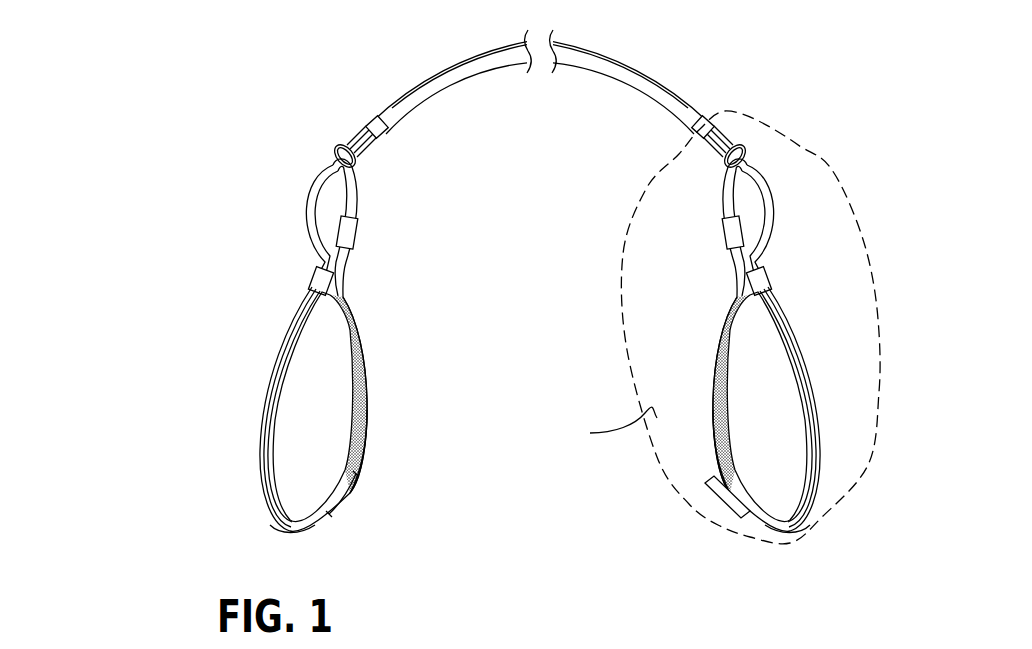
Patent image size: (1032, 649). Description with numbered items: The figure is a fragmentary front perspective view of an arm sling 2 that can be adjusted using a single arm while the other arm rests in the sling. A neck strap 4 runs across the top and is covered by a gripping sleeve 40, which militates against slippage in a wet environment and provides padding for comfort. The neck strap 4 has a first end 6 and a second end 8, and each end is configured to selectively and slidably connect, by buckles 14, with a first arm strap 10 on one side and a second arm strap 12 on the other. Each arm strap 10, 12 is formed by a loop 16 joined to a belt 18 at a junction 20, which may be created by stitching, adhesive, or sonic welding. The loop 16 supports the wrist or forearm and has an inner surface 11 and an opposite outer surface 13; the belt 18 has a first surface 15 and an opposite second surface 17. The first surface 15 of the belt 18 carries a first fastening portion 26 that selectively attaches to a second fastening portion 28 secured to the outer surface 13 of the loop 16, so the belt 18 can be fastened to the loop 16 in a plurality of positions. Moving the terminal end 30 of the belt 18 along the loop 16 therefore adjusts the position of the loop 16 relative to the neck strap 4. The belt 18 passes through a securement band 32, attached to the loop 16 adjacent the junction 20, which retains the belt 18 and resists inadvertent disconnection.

The arm sling 2 is at (530, 289).
The gripping sleeve 40 is at (482, 60).
The neck strap 4 is at (366, 120).
The buckles 14 is at (340, 142).
The second end 8 is at (328, 151).
The first end 6 is at (753, 148).
The belt 18 is at (305, 203).
The junction 20 is at (359, 232).
The securement band 32 is at (310, 281).
The second arm strap 12 is at (263, 381).
The first arm strap 10 is at (812, 349).
The first fastening portion 26 is at (261, 422).
The first surface 15 is at (263, 407).
The inner surface 11 is at (279, 438).
The second fastening portion 28 is at (362, 337).
The loop 16 is at (363, 408).
The outer surface 13 is at (369, 450).
The terminal end 30 is at (364, 481).
The second surface 17 is at (342, 511).